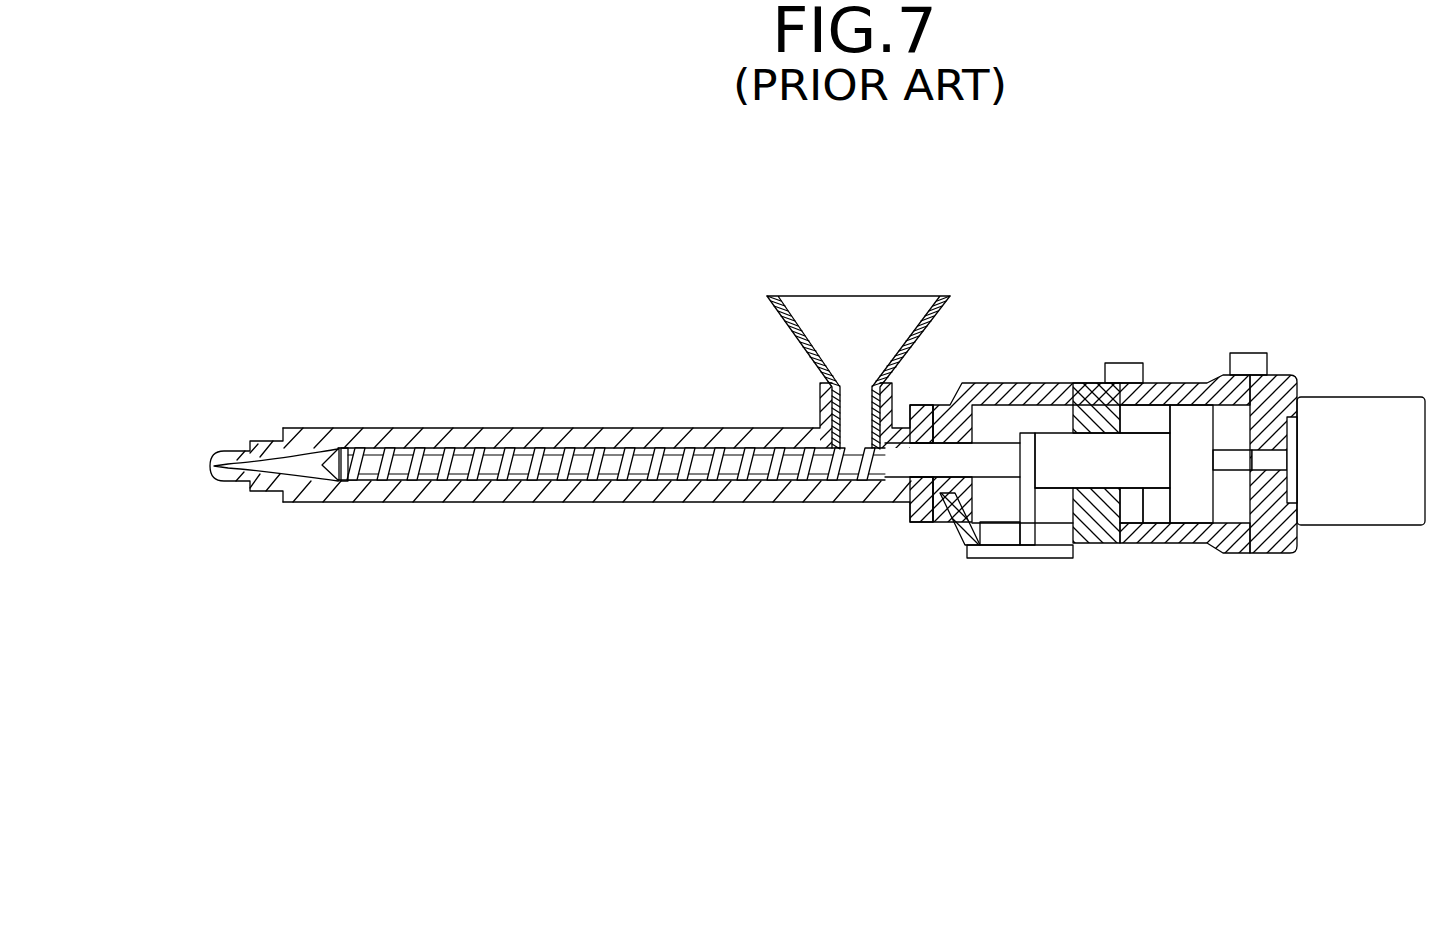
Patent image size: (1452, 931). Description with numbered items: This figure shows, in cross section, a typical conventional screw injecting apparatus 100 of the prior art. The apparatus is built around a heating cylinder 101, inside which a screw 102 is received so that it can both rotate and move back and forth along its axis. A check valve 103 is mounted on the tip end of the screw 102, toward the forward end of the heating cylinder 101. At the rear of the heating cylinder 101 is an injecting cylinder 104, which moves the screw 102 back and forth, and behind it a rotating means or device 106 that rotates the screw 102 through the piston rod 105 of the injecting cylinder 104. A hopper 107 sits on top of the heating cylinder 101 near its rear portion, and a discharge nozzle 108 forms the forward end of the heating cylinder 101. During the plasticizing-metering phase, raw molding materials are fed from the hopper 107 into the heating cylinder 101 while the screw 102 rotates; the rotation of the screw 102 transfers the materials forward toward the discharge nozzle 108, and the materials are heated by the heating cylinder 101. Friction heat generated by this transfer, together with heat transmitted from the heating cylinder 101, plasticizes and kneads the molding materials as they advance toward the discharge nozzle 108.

The screw injecting apparatus 100 is at (1272, 213).
The heating cylinder 101 is at (740, 502).
The screw 102 is at (578, 481).
The check valve 103 is at (355, 447).
The injecting cylinder 104 is at (1190, 543).
The piston rod 105 is at (1140, 543).
The rotating means 106 is at (1370, 525).
The hopper 107 is at (948, 296).
The discharge nozzle 108 is at (212, 467).